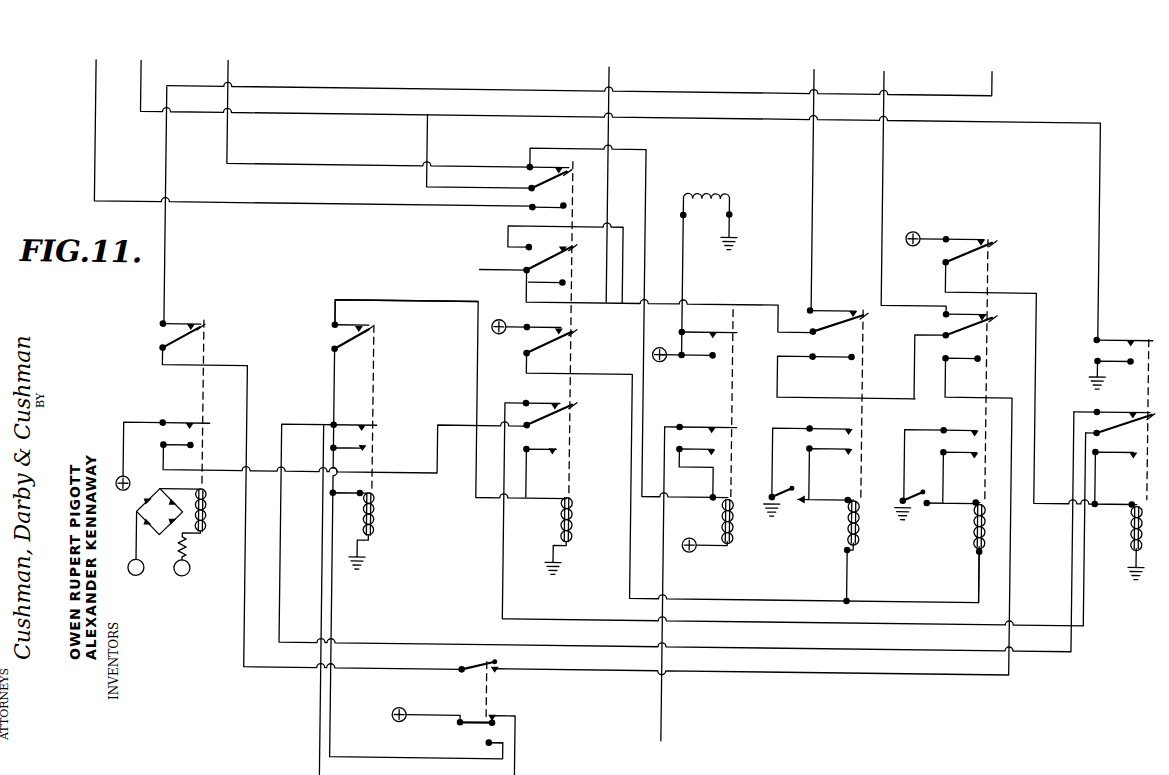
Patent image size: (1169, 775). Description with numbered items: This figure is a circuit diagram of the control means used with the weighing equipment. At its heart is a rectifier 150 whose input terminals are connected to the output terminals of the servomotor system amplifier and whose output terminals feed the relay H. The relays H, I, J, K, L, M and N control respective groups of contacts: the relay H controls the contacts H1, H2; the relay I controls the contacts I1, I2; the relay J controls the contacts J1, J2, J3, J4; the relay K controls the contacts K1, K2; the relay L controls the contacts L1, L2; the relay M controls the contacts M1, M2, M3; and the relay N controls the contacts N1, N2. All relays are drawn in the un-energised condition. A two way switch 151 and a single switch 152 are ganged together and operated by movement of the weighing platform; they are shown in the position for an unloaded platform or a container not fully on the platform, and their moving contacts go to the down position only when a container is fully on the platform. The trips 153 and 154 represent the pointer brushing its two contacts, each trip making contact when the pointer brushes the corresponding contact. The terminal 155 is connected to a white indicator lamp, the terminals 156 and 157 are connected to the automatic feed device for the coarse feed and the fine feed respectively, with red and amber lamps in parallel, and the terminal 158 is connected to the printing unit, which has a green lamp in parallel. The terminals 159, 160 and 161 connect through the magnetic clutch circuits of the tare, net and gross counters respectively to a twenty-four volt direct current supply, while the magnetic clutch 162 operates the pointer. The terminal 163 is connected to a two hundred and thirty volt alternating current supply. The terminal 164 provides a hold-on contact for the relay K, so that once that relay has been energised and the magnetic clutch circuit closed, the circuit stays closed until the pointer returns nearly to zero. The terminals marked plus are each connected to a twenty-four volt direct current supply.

The rectifier 150 is at (159, 511).
The two way switch 151 is at (453, 740).
The single switch 152 is at (462, 682).
The trip 153 is at (776, 518).
The trip 154 is at (909, 519).
The terminal 155 is at (607, 167).
The terminal 156 is at (812, 172).
The terminal 157 is at (906, 175).
The terminal 158 is at (588, 62).
The terminal 159 is at (322, 118).
The terminal 160 is at (371, 96).
The terminal 161 is at (611, 183).
The magnetic clutch 162 is at (707, 274).
The terminal 163 is at (485, 270).
The terminal 164 is at (661, 601).
The relay H is at (167, 532).
The contact H1 is at (321, 456).
The contact H2 is at (296, 377).
The relay I is at (416, 623).
The contact I1 is at (675, 588).
The contact I2 is at (390, 395).
The relay J is at (453, 437).
The contact J1 is at (794, 513).
The contact J2 is at (735, 461).
The contact J3 is at (660, 277).
The contact J4 is at (570, 307).
The relay K is at (707, 523).
The contact K1 is at (700, 460).
The contact K2 is at (694, 404).
The relay L is at (838, 550).
The contact L1 is at (812, 464).
The contact L2 is at (846, 404).
The relay M is at (967, 551).
The contact M1 is at (941, 466).
The contact M2 is at (754, 492).
The contact M3 is at (1019, 368).
The relay N is at (1120, 540).
The contact N1 is at (1114, 458).
The contact N2 is at (1120, 418).